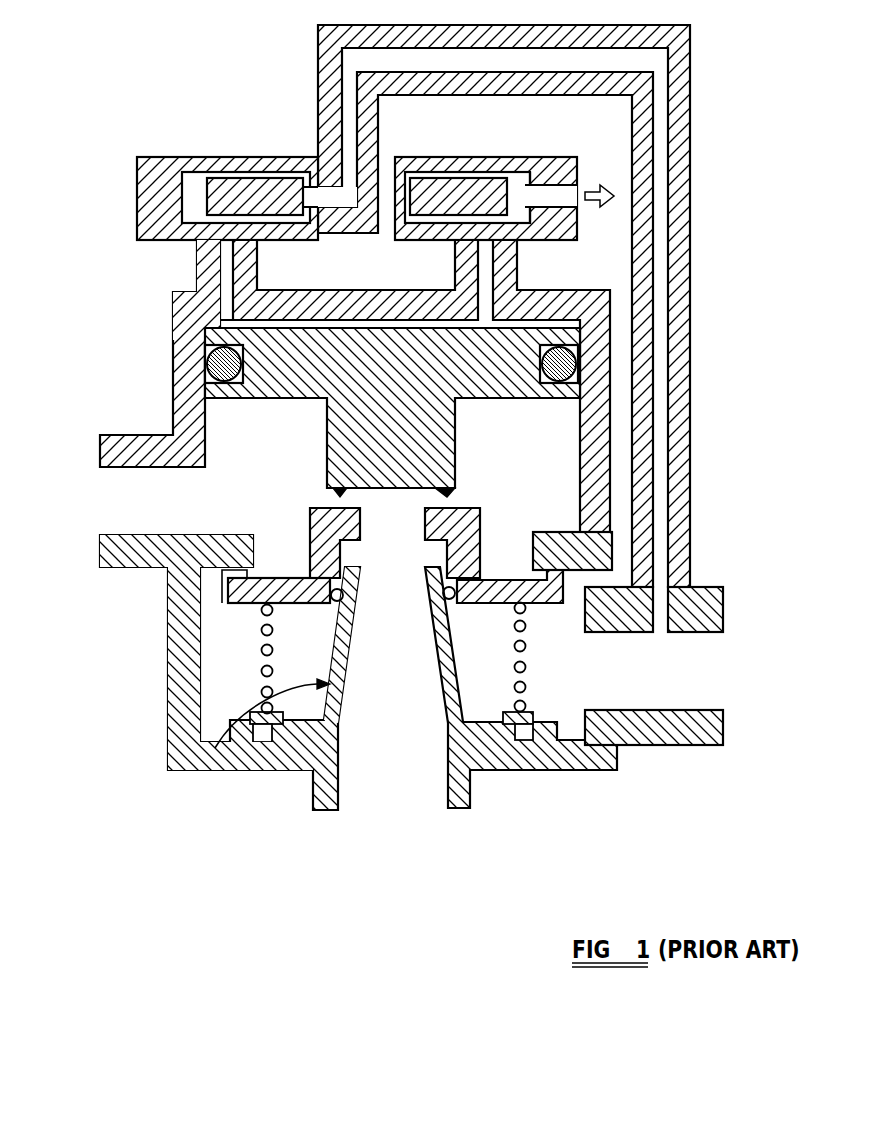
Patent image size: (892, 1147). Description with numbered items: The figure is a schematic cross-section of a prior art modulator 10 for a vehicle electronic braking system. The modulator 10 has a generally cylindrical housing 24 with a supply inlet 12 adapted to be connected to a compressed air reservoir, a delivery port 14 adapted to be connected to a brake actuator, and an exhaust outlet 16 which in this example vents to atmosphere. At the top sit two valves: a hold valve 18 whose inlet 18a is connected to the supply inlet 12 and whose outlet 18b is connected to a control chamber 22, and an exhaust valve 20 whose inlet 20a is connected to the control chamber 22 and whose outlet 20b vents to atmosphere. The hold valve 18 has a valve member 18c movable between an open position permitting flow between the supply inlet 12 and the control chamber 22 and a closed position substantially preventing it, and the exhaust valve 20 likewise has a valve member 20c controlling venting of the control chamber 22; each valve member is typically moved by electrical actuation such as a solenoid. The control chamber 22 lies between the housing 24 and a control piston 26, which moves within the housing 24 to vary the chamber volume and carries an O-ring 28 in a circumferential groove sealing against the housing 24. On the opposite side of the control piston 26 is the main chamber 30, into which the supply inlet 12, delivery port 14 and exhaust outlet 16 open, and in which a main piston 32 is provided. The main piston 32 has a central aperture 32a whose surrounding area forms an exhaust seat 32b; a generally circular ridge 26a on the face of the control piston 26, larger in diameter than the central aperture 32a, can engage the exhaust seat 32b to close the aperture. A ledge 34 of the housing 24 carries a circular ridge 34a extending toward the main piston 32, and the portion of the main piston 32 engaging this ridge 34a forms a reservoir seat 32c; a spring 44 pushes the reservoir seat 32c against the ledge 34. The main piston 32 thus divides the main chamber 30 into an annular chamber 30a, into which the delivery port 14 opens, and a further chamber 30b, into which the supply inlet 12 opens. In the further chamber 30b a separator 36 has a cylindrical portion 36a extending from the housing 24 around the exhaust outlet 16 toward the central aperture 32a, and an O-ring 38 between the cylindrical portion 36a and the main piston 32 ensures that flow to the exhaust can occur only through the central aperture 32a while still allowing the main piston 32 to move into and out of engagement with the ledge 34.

The modulator 10 is at (528, 804).
The supply inlet 12 is at (707, 710).
The delivery port 14 is at (120, 537).
The exhaust outlet 16 is at (448, 777).
The hold valve 18 is at (160, 240).
The inlet 18a is at (305, 206).
The outlet 18b is at (197, 270).
The valve member 18c is at (243, 183).
The exhaust valve 20 is at (500, 157).
The inlet 20a is at (500, 228).
The outlet 20b is at (560, 190).
The valve member 20c is at (448, 190).
The control chamber 22 is at (207, 327).
The housing 24 is at (320, 300).
The control piston 26 is at (265, 393).
The ridge 26a is at (443, 493).
The O-ring 28 is at (225, 366).
The main chamber 30 is at (215, 497).
The annular chamber 30a is at (223, 448).
The further chamber 30b is at (208, 718).
The main piston 32 is at (240, 607).
The central aperture 32a is at (368, 530).
The exhaust seat 32b is at (440, 510).
The reservoir seat 32c is at (540, 577).
The ledge 34 is at (240, 577).
The ridge 34a is at (580, 565).
The separator 36 is at (207, 770).
The cylindrical portion 36a is at (320, 700).
The O-ring 38 is at (450, 600).
The spring 44 is at (267, 650).